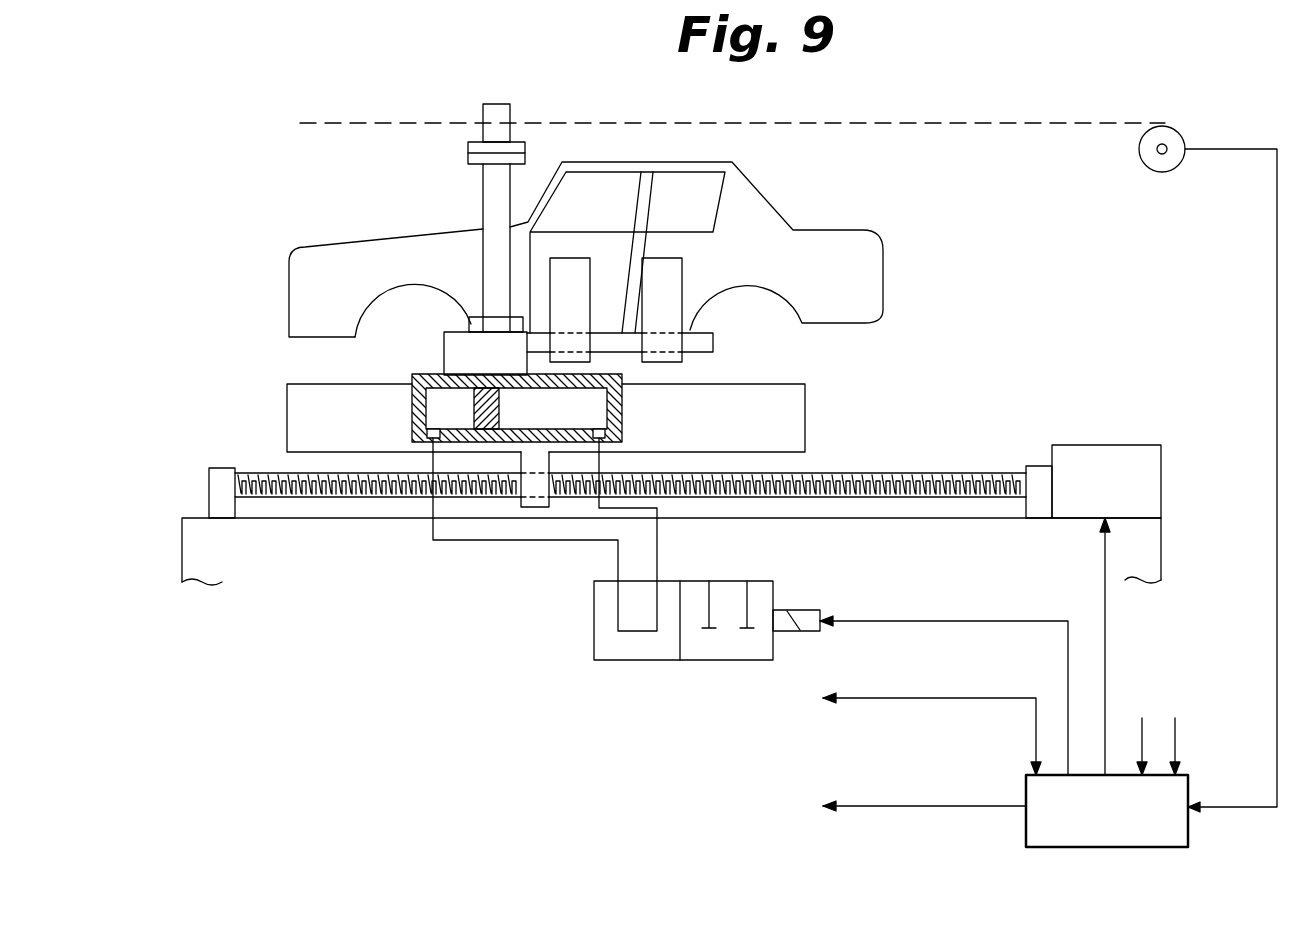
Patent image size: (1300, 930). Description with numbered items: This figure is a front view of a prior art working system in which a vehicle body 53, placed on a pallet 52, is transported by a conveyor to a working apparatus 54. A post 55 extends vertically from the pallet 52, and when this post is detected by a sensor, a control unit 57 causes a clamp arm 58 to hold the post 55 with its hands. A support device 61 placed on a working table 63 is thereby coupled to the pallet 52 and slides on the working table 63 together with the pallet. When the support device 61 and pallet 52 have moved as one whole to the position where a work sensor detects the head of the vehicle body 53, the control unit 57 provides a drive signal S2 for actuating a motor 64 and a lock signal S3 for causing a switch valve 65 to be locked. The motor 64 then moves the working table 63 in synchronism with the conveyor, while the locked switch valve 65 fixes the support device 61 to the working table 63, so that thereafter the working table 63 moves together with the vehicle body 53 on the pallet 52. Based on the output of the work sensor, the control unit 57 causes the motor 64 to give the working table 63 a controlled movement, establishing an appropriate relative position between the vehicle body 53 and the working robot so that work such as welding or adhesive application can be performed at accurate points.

The pallet 52 is at (726, 343).
The vehicle body 53 is at (884, 276).
The working apparatus 54 is at (175, 578).
The post 55 is at (488, 185).
The control unit 57 is at (1026, 828).
The clamp arm 58 is at (473, 316).
The support device 61 is at (444, 352).
The working table 63 is at (810, 418).
The motor 64 is at (1110, 456).
The switch valve 65 is at (645, 660).
The drive signal S2 is at (1108, 657).
The lock signal S3 is at (943, 621).